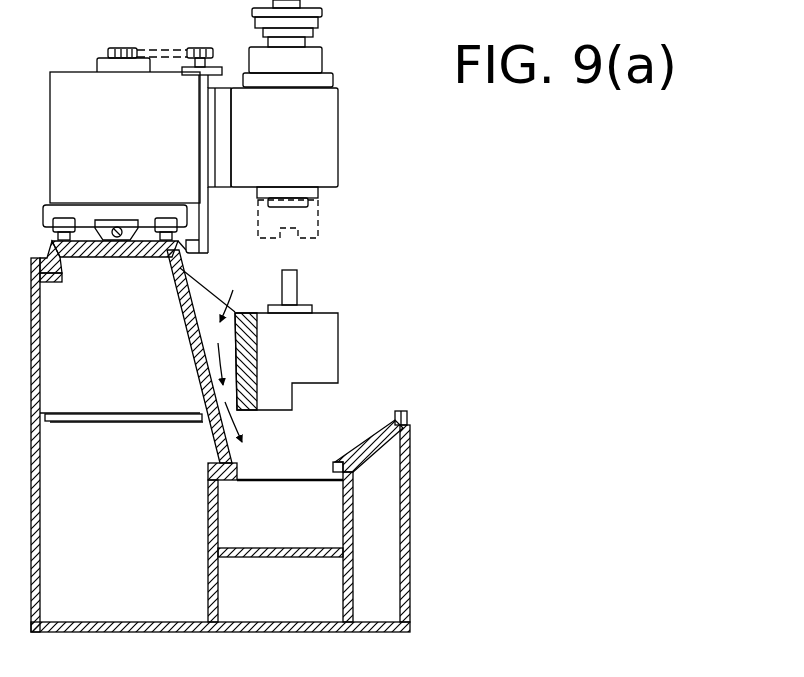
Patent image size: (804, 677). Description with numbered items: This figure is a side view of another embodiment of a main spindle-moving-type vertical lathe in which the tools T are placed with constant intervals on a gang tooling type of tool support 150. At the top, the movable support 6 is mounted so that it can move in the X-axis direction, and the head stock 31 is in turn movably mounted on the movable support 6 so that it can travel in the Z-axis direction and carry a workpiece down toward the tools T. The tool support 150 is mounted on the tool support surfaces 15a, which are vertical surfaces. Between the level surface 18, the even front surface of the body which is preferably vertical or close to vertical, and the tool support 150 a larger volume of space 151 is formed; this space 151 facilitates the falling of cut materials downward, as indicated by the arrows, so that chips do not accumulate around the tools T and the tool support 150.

The movable support 6 is at (135, 155).
The head stock 31 is at (268, 155).
The level surface 18 is at (190, 290).
The space 151 is at (200, 328).
The tool support 150 is at (339, 345).
The tool T is at (298, 280).
The tool support surface 15a is at (246, 400).